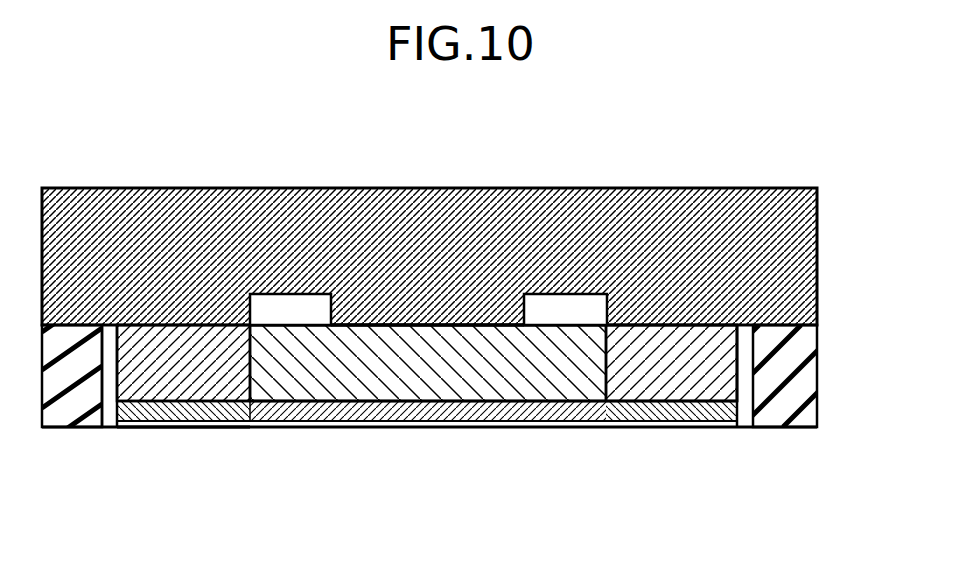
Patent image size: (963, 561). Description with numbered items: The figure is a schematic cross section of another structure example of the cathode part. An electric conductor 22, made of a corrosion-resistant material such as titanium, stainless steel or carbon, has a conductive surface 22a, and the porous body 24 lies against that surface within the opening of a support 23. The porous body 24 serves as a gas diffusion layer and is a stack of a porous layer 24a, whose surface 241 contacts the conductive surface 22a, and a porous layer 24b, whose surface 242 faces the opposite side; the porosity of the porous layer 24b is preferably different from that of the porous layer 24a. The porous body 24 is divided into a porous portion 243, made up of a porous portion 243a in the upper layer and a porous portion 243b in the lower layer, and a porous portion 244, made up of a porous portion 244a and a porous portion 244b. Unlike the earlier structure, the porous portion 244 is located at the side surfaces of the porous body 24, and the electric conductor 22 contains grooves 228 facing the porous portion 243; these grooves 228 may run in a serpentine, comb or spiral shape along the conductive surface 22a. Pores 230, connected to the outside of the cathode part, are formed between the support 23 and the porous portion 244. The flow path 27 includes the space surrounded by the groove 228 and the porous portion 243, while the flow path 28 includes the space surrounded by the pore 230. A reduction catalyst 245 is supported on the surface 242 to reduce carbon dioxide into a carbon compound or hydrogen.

The electric conductor 22 is at (858, 185).
The conductive surface 22a is at (760, 328).
The support 23 is at (73, 427).
The porous body 24 is at (530, 379).
The porous layer 24a is at (846, 327).
The porous layer 24b is at (846, 402).
The flow path 27 is at (292, 303).
The flow path 28 is at (110, 367).
The groove 228 is at (260, 296).
The pore 230 is at (162, 413).
The surface 241 is at (482, 325).
The surface 242 is at (142, 427).
The porous portion 243 is at (428, 436).
The porous portion 243a is at (330, 368).
The porous portion 243b is at (413, 410).
The porous portion 244 is at (671, 425).
The porous portion 244a is at (645, 380).
The porous portion 244b is at (673, 403).
The reduction catalyst 245 is at (519, 424).